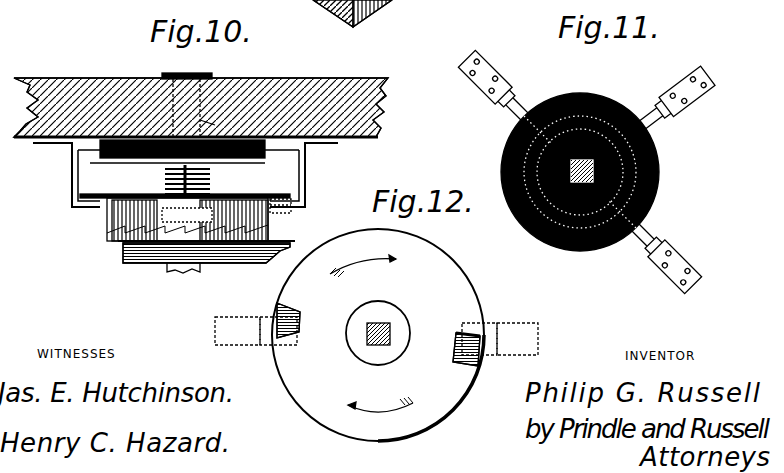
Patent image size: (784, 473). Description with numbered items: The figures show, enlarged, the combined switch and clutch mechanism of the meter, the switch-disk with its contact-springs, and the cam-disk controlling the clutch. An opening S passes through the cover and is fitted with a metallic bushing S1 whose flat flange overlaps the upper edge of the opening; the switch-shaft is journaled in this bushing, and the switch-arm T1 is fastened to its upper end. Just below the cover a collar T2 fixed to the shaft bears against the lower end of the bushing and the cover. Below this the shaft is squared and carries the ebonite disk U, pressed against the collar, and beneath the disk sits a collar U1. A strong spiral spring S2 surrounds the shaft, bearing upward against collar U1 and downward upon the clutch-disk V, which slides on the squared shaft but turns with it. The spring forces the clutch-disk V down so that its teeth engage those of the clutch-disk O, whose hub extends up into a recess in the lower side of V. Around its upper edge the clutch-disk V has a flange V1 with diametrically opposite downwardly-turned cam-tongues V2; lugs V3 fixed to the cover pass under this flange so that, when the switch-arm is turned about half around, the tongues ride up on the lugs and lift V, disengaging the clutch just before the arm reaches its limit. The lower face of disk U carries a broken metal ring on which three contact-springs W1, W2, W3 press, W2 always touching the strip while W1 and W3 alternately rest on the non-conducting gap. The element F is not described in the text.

In FIG. 10, the opening S is at (201, 107).
In FIG. 10, the metallic bushing S1 is at (208, 78).
In FIG. 10, the spiral spring S2 is at (175, 184).
In FIG. 10, the switch-arm T1 is at (271, 199).
In FIG. 10, the collar or flange T2 is at (215, 125).
In FIG. 10, the disk U is at (262, 150).
In FIG. 11, the disk U is at (596, 90).
In FIG. 12, the disk U is at (412, 352).
In FIG. 10, the collar U1 is at (218, 164).
In FIG. 10, the clutch-disk V is at (110, 229).
In FIG. 12, the flange V1 is at (328, 386).
In FIG. 10, the cam-tongues V2 is at (80, 208).
In FIG. 12, the cam-tongues V2 is at (300, 318).
In FIG. 10, the lugs V3 is at (76, 188).
In FIG. 10, the clutch-disk O is at (118, 243).
In FIG. 10, the tab F is at (168, 264).
In FIG. 11, the contact-spring W1 is at (495, 72).
In FIG. 11, the contact-spring W2 is at (690, 100).
In FIG. 11, the contact-spring W3 is at (690, 277).